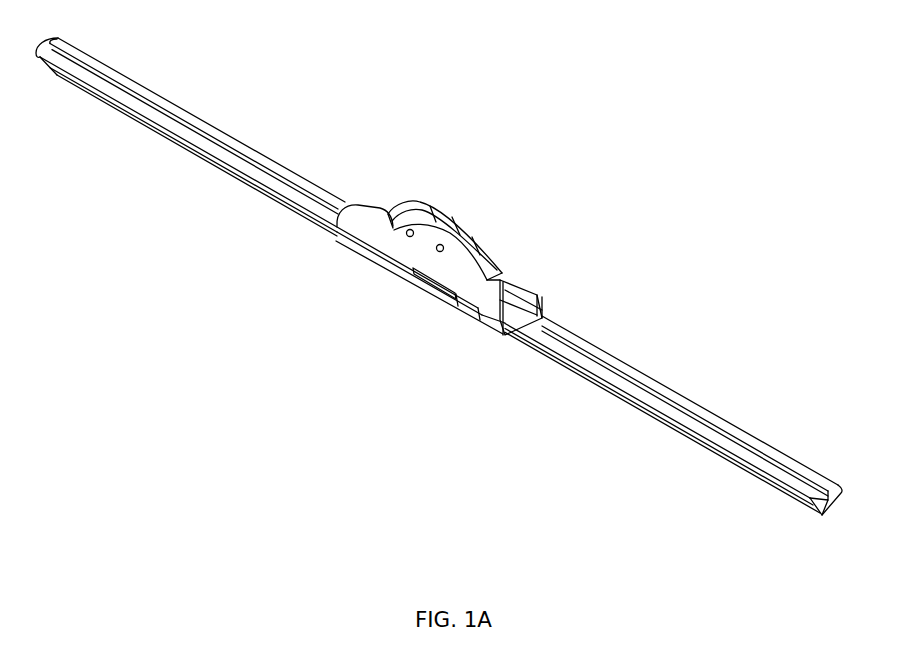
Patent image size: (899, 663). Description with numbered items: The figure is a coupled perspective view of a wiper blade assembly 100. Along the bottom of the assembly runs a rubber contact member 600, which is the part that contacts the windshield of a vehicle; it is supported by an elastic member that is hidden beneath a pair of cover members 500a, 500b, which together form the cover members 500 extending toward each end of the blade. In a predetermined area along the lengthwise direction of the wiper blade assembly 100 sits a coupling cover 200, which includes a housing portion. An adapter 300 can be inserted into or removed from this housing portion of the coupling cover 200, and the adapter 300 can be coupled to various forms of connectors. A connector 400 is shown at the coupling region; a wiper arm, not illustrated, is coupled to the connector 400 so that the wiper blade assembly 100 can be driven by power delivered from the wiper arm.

The wiper blade assembly 100 is at (439, 276).
The coupling cover 200 is at (368, 205).
The adapter 300 is at (508, 275).
The connector 400 is at (478, 212).
The cover members 500 is at (430, 285).
The cover member 500a is at (268, 205).
The cover member 500b is at (565, 358).
The contact member 600 is at (734, 465).